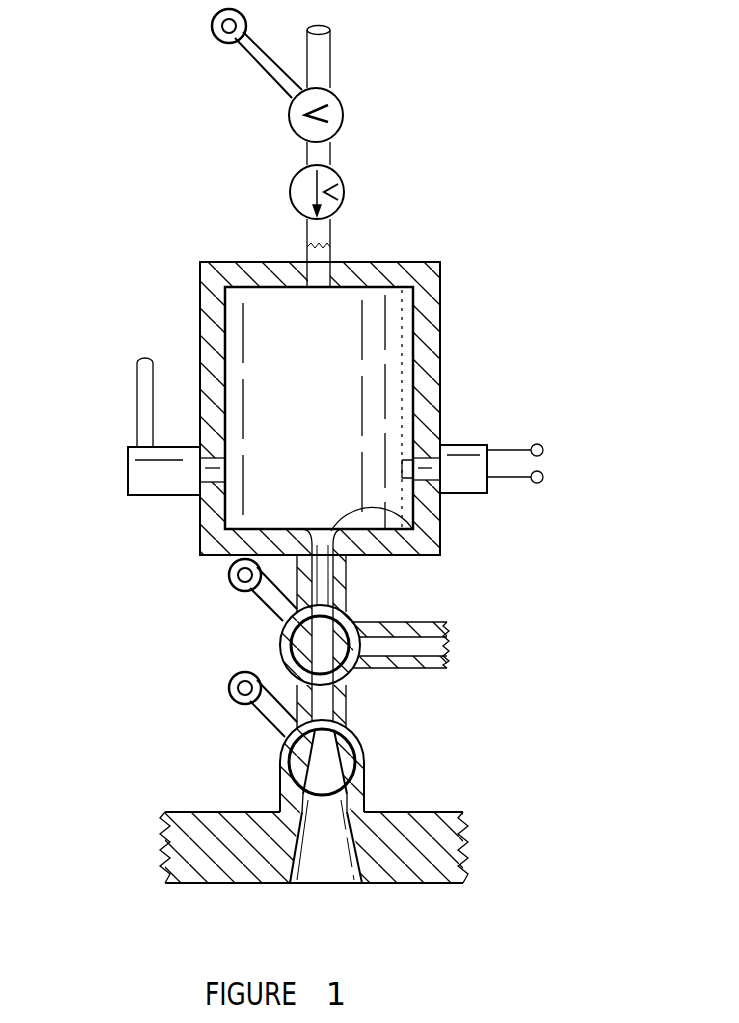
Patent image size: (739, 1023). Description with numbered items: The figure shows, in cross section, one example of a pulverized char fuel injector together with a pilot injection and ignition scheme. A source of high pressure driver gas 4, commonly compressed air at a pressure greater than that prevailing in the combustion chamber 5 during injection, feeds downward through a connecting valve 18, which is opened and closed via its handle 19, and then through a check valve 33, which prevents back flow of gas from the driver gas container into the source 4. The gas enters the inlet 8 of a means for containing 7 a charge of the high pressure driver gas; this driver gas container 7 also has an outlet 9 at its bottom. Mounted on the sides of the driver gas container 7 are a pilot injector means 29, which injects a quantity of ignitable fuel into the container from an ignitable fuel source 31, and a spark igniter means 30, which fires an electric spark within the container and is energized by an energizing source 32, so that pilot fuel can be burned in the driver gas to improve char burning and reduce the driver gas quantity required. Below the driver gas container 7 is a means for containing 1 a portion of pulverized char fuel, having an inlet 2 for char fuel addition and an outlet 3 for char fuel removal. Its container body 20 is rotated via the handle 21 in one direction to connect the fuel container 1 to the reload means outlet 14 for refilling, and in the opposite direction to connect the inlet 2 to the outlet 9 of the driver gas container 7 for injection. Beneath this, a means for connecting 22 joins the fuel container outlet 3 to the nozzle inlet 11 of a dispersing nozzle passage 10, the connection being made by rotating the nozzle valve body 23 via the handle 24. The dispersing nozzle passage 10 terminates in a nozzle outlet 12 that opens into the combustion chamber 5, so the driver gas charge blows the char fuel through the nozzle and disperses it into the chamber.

The means for containing 1 is at (347, 670).
The inlet 2 is at (350, 607).
The outlet 3 is at (303, 630).
The source of high pressure driver gas 4 is at (331, 52).
The combustion chamber 5 is at (365, 936).
The means for containing 7 is at (343, 360).
The inlet 8 is at (309, 258).
The outlet 9 is at (413, 508).
The dispersing nozzle passage 10 is at (320, 840).
The nozzle inlet 11 is at (317, 806).
The nozzle outlet 12 is at (320, 870).
The reload means outlet 14 is at (388, 670).
The means for connecting 18 is at (343, 112).
The handle 19 is at (247, 60).
The container body 20 is at (290, 631).
The handle 21 is at (253, 597).
The means for connecting 22 is at (358, 750).
The nozzle valve body 23 is at (322, 767).
The handle 24 is at (253, 709).
The pilot injector means 29 is at (150, 498).
The spark igniter means 30 is at (462, 445).
The ignitable fuel source 31 is at (137, 385).
The energizing source 32 is at (543, 451).
The check valve 33 is at (345, 191).